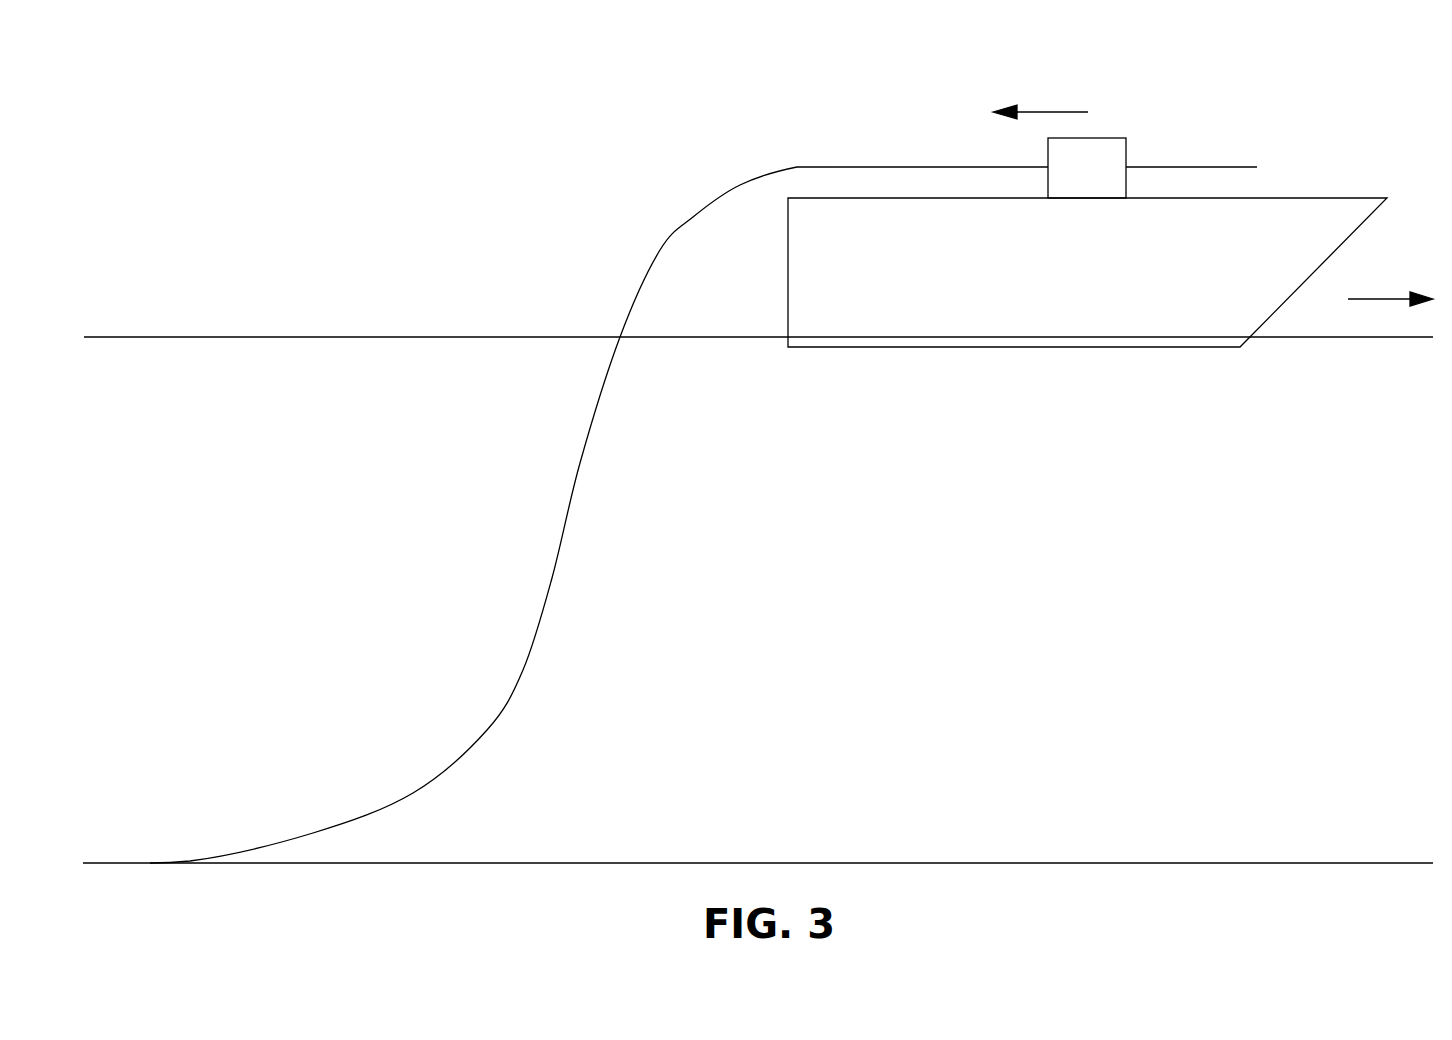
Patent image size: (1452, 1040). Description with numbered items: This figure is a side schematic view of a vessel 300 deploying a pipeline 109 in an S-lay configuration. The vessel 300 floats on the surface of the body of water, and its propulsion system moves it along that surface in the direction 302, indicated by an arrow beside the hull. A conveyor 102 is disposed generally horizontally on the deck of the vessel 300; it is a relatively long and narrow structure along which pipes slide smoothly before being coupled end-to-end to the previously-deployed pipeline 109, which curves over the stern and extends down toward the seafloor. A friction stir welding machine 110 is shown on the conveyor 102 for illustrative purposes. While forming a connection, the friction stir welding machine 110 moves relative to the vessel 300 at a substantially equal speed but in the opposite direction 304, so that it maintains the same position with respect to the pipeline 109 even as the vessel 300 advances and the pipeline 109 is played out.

The pipeline 109 is at (673, 235).
The conveyor 102 is at (1180, 167).
The friction stir welding machine 110 is at (1111, 180).
The vessel 300 is at (1332, 197).
The direction of vessel travel 304 is at (1028, 112).
The direction 302 is at (1388, 302).